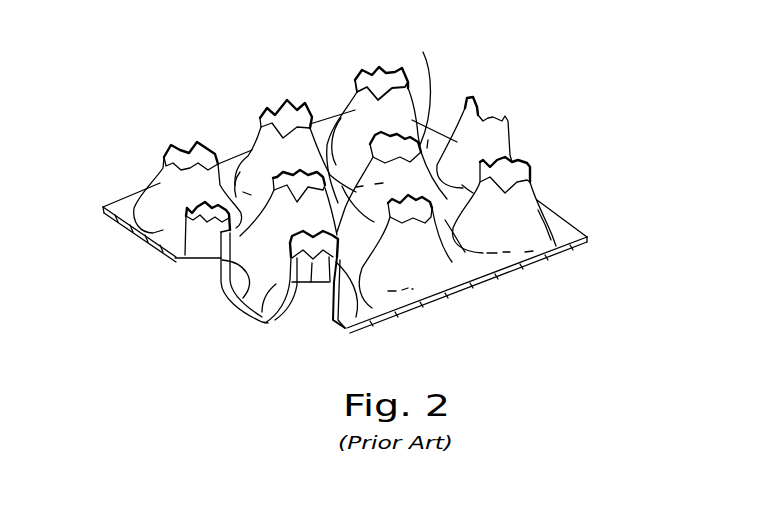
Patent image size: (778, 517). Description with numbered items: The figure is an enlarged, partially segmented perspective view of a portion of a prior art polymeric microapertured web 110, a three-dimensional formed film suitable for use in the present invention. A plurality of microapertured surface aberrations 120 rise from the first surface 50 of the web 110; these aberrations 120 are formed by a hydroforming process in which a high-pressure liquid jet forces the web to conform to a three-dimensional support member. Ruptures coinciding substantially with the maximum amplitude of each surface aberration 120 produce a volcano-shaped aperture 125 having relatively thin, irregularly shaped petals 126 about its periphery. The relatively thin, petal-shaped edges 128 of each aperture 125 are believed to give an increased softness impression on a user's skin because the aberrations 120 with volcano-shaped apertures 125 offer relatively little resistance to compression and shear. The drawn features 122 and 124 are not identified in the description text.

The first surface 50 is at (500, 262).
The polymeric microapertured web 110 is at (530, 113).
The microapertured surface aberrations 120 is at (162, 175).
The slot in plate edge 122 is at (311, 288).
The skirt / base of projection 124 is at (538, 197).
The volcano-shaped aperture 125 is at (384, 74).
The petals 126 is at (473, 102).
The petal-shaped edges 128 is at (372, 70).